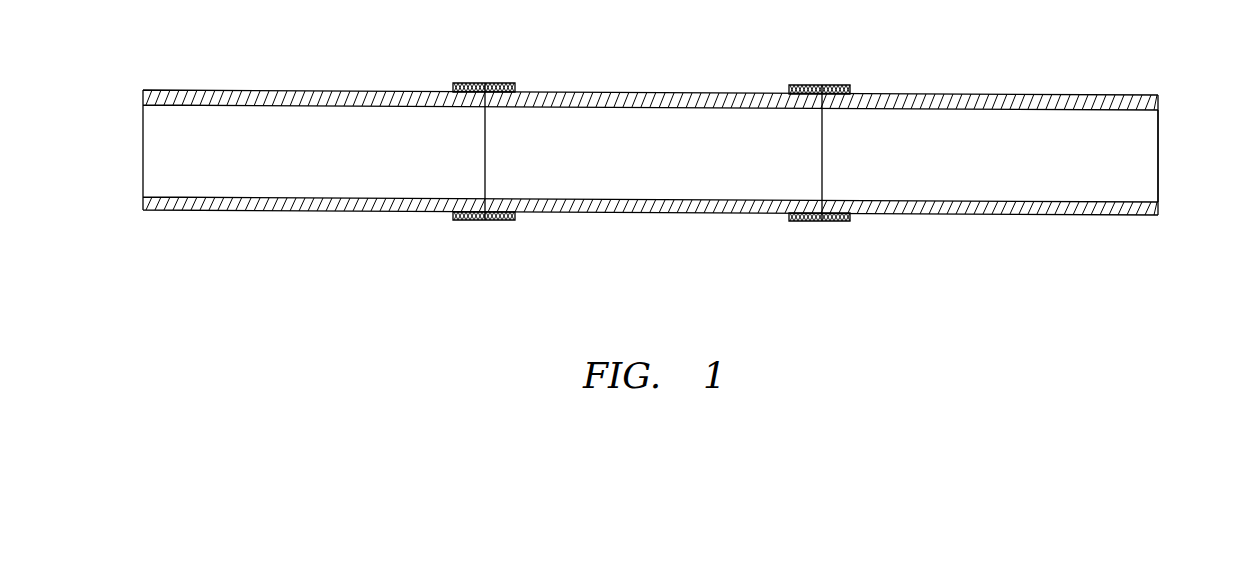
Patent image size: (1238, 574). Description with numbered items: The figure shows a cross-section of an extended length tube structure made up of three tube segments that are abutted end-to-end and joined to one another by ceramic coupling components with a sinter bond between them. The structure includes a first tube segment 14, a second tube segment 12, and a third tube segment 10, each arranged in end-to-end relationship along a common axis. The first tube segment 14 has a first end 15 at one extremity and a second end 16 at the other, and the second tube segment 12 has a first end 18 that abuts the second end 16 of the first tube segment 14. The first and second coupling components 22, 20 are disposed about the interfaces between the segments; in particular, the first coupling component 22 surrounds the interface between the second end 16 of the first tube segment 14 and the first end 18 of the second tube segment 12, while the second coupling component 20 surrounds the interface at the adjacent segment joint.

The third tube segment 10 is at (303, 91).
The second tube segment 12 is at (668, 92).
The first tube segment 14 is at (1012, 215).
The first end 15 is at (1148, 157).
The second end 16 is at (832, 173).
The first end 18 is at (807, 173).
The second coupling component 20 is at (482, 83).
The first coupling component 22 is at (822, 85).